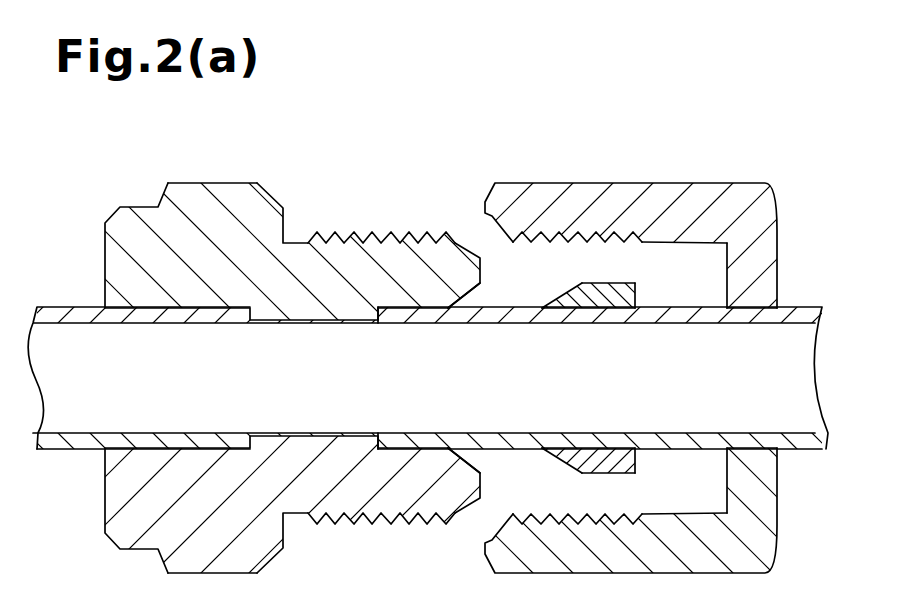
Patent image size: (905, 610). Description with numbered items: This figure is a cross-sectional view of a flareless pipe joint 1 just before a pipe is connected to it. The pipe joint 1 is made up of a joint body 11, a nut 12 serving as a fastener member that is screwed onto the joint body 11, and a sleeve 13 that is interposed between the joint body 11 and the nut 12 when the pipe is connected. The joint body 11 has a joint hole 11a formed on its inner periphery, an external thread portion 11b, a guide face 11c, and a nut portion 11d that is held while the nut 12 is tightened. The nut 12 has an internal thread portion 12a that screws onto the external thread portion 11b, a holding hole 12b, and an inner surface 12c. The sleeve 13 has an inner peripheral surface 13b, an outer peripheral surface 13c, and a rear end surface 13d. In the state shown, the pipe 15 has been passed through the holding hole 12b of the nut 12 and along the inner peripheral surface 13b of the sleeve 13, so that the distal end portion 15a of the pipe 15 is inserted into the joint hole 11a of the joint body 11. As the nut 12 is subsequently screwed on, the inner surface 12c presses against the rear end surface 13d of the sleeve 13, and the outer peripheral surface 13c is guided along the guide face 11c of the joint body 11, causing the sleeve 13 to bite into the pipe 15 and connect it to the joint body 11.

The pipe joint 1 is at (133, 150).
The joint body 11 is at (138, 210).
The joint hole 11a is at (414, 312).
The external thread portion 11b is at (362, 231).
The guide face 11c is at (468, 310).
The nut portion 11d is at (223, 183).
The nut 12 is at (607, 183).
The internal thread portion 12a is at (545, 243).
The holding hole 12b is at (761, 310).
The inner surface 12c is at (718, 310).
The sleeve 13 is at (620, 305).
The inner peripheral surface 13b is at (584, 310).
The outer peripheral surface 13c is at (577, 282).
The rear end surface 13d is at (637, 289).
The pipe 15 is at (797, 306).
The distal end portion 15a is at (376, 320).